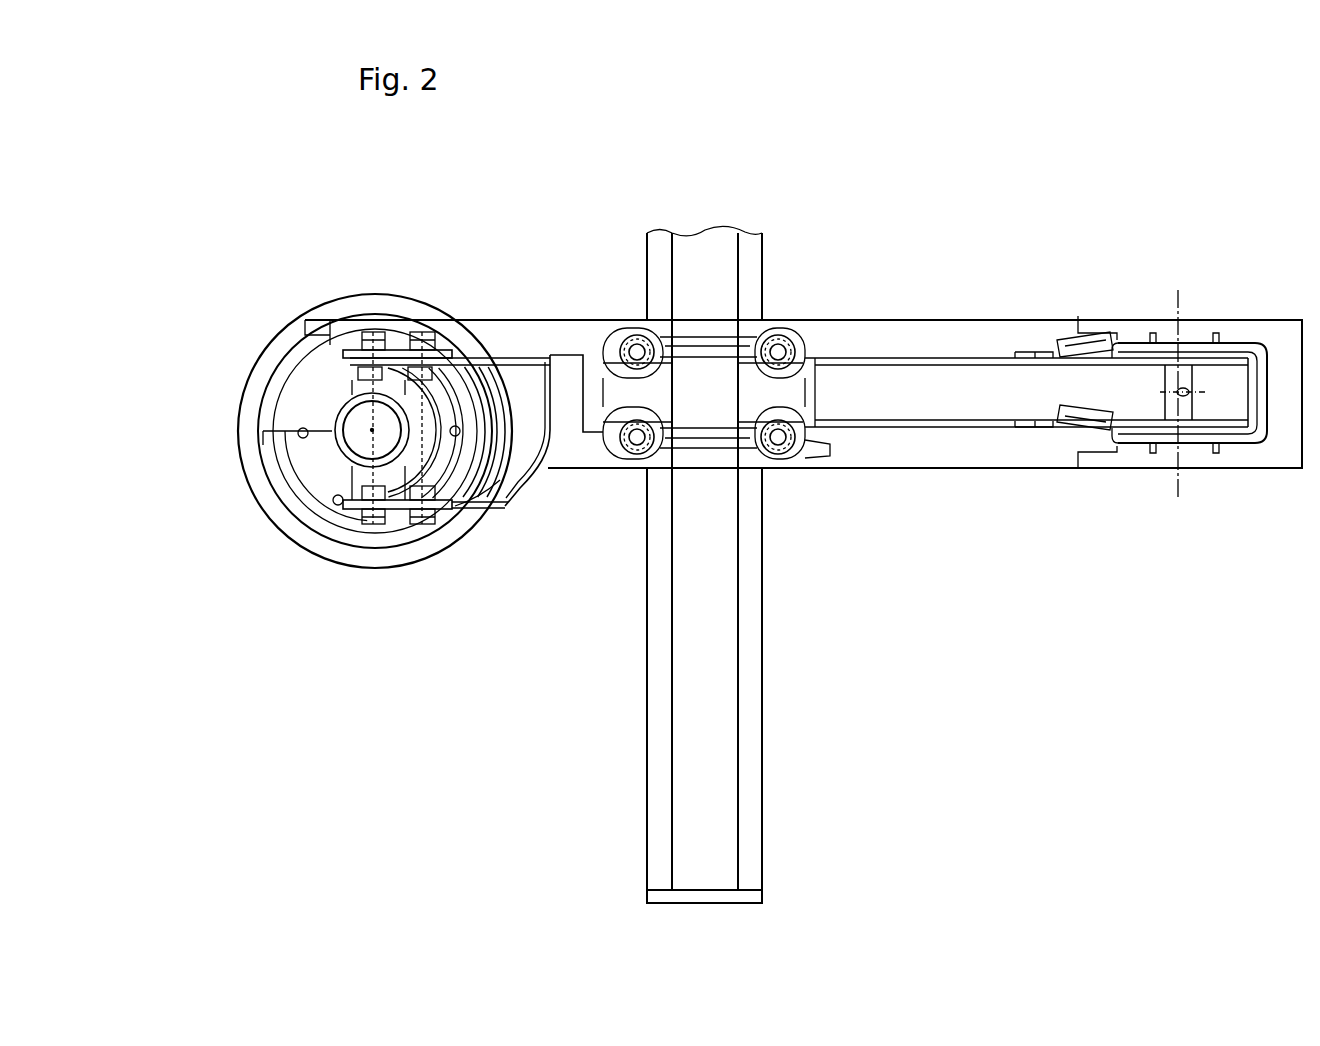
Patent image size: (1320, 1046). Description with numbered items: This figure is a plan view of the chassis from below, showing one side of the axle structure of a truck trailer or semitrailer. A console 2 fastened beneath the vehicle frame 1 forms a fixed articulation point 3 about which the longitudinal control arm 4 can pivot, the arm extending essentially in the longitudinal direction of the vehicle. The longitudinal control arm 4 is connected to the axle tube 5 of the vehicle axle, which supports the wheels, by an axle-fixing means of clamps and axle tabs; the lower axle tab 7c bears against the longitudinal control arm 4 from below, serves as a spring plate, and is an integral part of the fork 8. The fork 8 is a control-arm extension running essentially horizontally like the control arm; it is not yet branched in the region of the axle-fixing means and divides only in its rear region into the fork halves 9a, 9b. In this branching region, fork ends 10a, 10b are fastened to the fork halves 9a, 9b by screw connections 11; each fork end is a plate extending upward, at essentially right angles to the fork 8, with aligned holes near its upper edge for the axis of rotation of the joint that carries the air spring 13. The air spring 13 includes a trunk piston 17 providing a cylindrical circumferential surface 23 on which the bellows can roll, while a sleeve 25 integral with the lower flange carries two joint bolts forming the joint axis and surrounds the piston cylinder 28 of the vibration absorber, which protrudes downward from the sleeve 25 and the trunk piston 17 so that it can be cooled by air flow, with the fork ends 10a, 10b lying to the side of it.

The vehicle frame 1 is at (981, 335).
The console 2 is at (1262, 440).
The articulation point 3 is at (1180, 302).
The longitudinal control arm 4 is at (931, 408).
The axle tube 5 is at (728, 723).
The lower axle tab 7c is at (790, 392).
The fork 8 is at (531, 378).
The fork half 9a is at (472, 512).
The fork half 9b is at (464, 355).
The fork end 10a is at (400, 522).
The fork end 10b is at (395, 345).
The screw connection 11 is at (433, 512).
The air spring 13 is at (243, 470).
The trunk piston 17 is at (317, 535).
The circumferential surface 23 is at (261, 380).
The sleeve 25 is at (421, 451).
The piston cylinder 28 is at (260, 507).